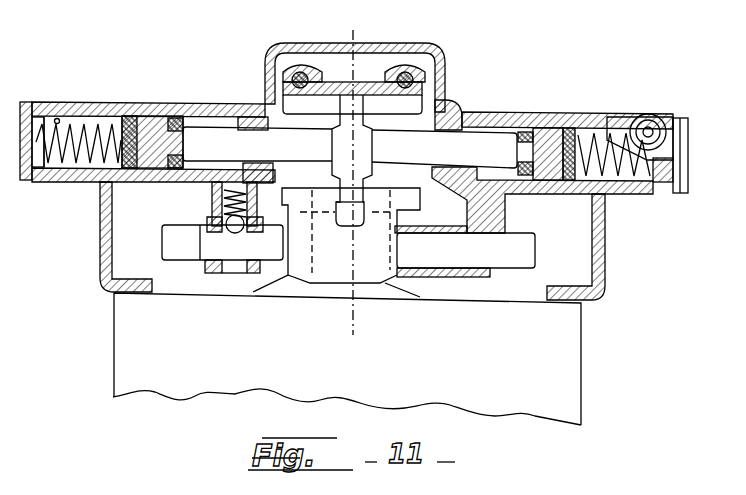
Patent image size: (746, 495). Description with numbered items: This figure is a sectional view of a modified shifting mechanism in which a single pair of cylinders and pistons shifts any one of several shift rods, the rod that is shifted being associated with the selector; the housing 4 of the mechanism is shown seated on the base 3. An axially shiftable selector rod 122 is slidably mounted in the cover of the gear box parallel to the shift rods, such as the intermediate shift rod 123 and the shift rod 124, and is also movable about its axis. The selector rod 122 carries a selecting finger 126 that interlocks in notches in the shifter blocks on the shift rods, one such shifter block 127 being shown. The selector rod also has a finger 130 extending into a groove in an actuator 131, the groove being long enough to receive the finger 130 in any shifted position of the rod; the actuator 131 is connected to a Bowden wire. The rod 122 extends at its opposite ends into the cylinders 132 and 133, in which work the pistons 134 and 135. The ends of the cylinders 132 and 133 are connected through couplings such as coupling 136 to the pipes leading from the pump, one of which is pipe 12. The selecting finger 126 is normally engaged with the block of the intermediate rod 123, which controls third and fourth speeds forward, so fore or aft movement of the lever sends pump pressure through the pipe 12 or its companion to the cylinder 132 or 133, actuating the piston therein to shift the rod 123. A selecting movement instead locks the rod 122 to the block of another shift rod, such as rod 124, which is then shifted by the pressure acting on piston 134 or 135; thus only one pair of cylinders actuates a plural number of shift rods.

The base box 3 is at (130, 326).
The housing top plate 4 is at (246, 102).
The pipe 12 is at (392, 25).
The selector rod 122 is at (324, 146).
The shift rod 123 is at (447, 250).
The shift rod 124 is at (180, 253).
The selecting finger 126 is at (360, 197).
The shifter block 127 is at (398, 205).
The finger 130 is at (363, 95).
The actuator 131 is at (330, 83).
The cylinder 132 is at (72, 102).
The cylinder 133 is at (480, 130).
The piston 134 is at (158, 166).
The piston 135 is at (547, 165).
The coupling 136 is at (640, 113).